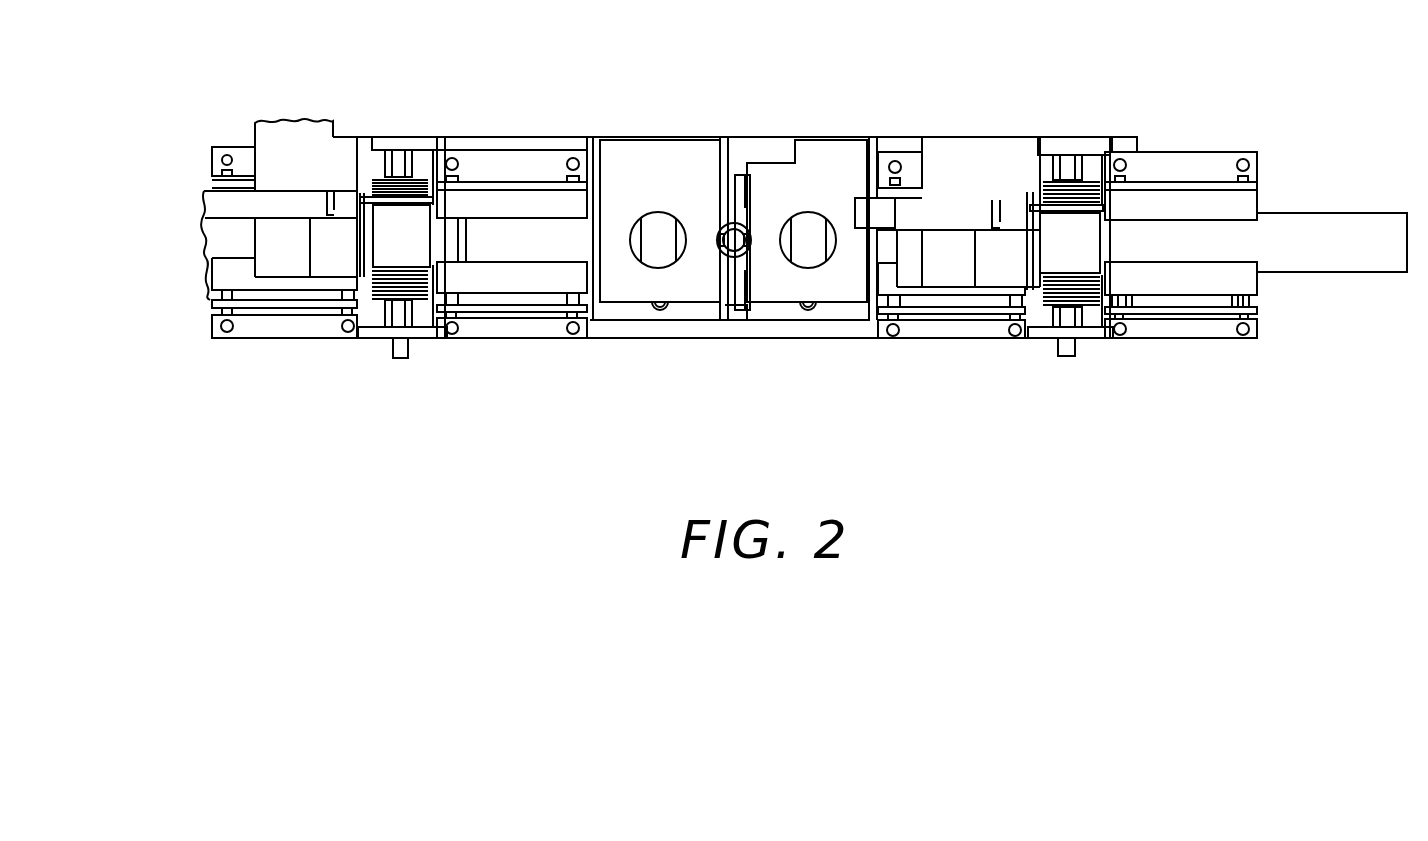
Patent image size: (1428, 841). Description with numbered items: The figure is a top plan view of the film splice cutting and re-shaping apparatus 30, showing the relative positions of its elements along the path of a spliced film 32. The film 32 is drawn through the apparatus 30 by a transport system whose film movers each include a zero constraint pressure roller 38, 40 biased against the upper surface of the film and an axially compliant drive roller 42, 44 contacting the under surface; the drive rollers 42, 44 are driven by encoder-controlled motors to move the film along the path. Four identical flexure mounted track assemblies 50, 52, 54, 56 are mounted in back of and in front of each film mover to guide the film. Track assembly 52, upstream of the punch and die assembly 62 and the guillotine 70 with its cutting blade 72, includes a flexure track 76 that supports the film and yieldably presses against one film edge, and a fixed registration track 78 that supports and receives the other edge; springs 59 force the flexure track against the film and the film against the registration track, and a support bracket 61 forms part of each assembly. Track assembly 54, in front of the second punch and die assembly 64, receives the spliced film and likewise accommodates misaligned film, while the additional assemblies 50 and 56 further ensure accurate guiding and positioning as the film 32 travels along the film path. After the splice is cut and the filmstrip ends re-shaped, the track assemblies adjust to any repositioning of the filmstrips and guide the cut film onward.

The film splice cutting and re-shaping apparatus 30 is at (732, 99).
The spliced film 32 is at (215, 242).
The zero constraint pressure roller 38 is at (411, 252).
The zero constraint pressure roller 40 is at (1050, 260).
The axially compliant drive roller 42 is at (412, 302).
The axially compliant drive roller 44 is at (1088, 306).
The flexure mounted track assembly 50 is at (299, 346).
The flexure mounted track assembly 52 is at (515, 285).
The flexure mounted track assembly 54 is at (939, 346).
The flexure mounted track assembly 56 is at (1189, 290).
The springs 59 is at (1128, 306).
The support bracket 61 is at (1198, 313).
The punch and die assembly 62 is at (628, 314).
The second punch and die assembly 64 is at (838, 315).
The guillotine 70 is at (716, 222).
The cutting blade 72 is at (746, 250).
The flexure track 76 is at (484, 277).
The fixed registration track 78 is at (540, 212).